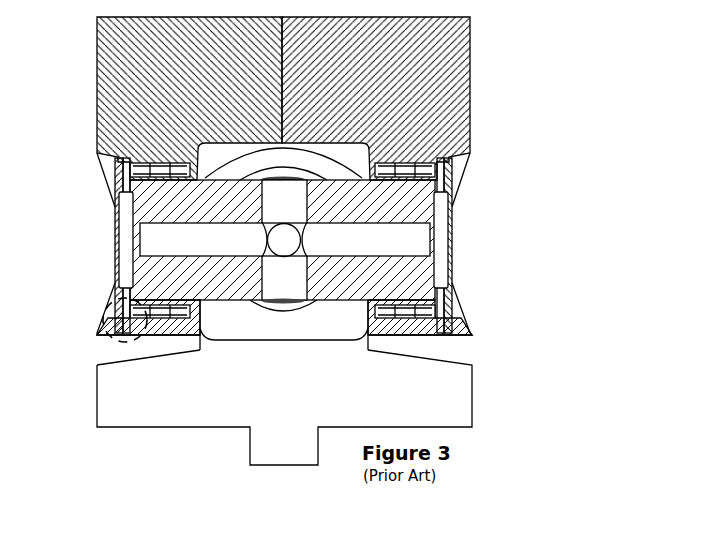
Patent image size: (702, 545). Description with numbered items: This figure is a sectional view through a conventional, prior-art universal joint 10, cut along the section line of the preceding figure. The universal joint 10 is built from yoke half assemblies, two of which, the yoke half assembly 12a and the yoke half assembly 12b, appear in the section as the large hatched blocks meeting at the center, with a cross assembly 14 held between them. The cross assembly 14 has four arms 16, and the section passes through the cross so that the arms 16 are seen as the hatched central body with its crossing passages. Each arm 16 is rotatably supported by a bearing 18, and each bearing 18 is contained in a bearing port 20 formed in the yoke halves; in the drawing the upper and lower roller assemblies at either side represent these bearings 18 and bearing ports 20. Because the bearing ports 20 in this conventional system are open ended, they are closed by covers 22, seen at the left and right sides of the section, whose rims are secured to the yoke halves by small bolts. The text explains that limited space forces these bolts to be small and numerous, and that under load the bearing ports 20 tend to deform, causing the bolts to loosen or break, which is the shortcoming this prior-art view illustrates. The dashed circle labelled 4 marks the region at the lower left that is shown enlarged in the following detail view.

The universal joint 10 is at (482, 37).
The yoke half assembly 12a is at (105, 78).
The yoke half assembly 12b is at (458, 76).
The cross assembly 14 is at (293, 323).
The arm 16 is at (250, 300).
The bearing 18 is at (158, 320).
The bearing port 20 is at (158, 162).
The cover 22 is at (115, 237).
The detail region 4 is at (105, 305).